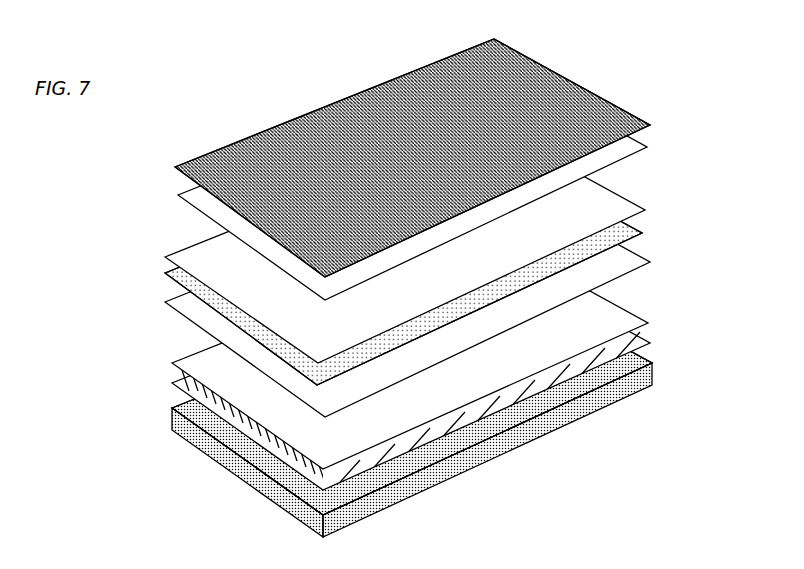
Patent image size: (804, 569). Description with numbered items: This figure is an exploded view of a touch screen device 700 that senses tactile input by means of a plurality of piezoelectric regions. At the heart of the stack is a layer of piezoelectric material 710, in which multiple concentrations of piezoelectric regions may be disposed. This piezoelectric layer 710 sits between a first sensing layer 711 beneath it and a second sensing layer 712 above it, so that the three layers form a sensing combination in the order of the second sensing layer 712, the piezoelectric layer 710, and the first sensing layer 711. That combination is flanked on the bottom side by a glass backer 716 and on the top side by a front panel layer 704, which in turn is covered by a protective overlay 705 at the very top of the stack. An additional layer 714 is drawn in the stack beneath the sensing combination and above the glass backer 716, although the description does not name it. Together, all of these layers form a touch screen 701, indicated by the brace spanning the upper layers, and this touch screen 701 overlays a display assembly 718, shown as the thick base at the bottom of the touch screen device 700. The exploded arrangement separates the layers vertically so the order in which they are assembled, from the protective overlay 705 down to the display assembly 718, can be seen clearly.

The touch screen device 700 is at (411, 281).
The touch screen 701 is at (411, 274).
The protective overlay 705 is at (176, 167).
The front panel layer 704 is at (182, 195).
The second sensing layer 712 is at (177, 240).
The piezoelectric layer 710 is at (160, 270).
The first sensing layer 711 is at (165, 302).
The lower layer 714 is at (172, 363).
The glass backer 716 is at (172, 383).
The display assembly 718 is at (165, 423).